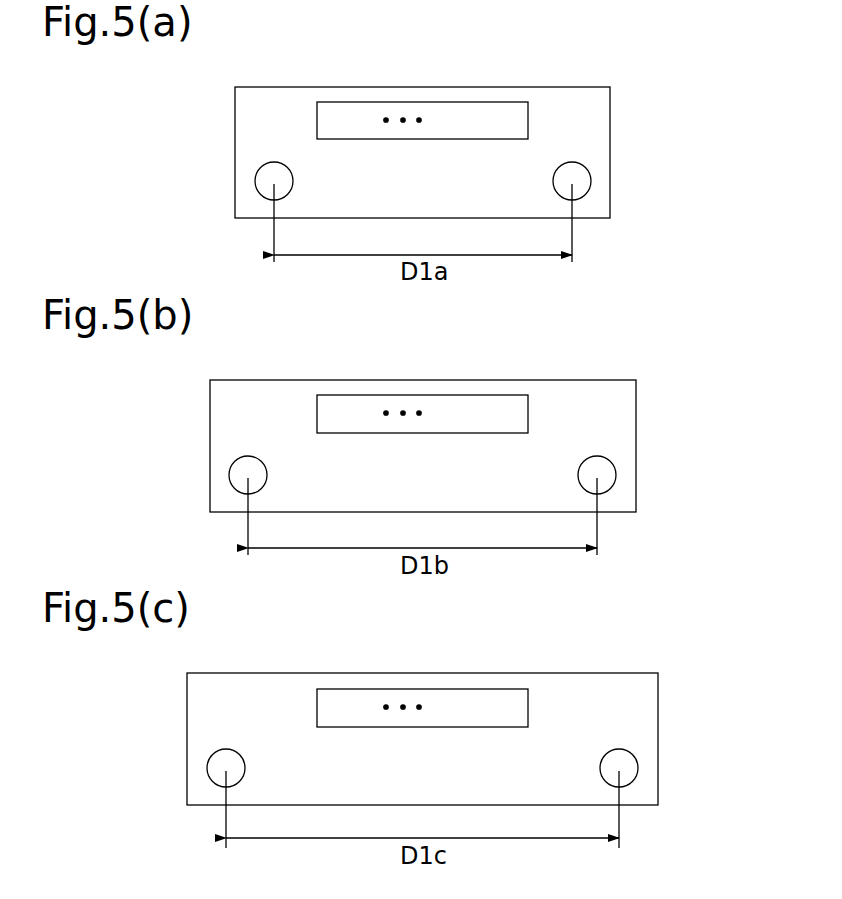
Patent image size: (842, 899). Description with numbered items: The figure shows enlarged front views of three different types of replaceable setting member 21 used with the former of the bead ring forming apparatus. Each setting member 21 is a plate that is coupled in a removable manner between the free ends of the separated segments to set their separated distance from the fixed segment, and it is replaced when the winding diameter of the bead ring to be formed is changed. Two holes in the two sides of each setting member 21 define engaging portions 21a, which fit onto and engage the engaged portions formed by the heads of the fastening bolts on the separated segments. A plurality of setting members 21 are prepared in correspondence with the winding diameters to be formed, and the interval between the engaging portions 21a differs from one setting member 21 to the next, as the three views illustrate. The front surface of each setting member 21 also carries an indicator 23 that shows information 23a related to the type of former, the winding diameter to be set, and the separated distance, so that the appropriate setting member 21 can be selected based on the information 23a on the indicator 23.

In FIG. 5A, the setting member 21 is at (269, 93).
In FIG. 5B, the setting member 21 is at (269, 386).
In FIG. 5C, the setting member 21 is at (269, 679).
In FIG. 5A, the engaging portions 21a is at (257, 183).
In FIG. 5B, the engaging portions 21a is at (231, 477).
In FIG. 5C, the engaging portions 21a is at (209, 770).
In FIG. 5A, the indicator 23 is at (432, 107).
In FIG. 5B, the indicator 23 is at (432, 400).
In FIG. 5C, the indicator 23 is at (432, 693).
In FIG. 5A, the information 23a is at (352, 110).
In FIG. 5B, the information 23a is at (352, 403).
In FIG. 5C, the information 23a is at (352, 696).